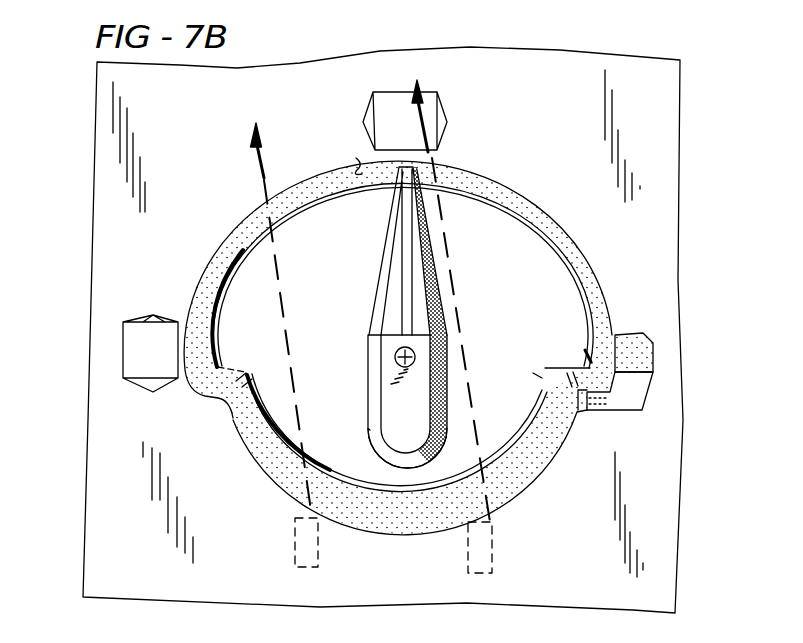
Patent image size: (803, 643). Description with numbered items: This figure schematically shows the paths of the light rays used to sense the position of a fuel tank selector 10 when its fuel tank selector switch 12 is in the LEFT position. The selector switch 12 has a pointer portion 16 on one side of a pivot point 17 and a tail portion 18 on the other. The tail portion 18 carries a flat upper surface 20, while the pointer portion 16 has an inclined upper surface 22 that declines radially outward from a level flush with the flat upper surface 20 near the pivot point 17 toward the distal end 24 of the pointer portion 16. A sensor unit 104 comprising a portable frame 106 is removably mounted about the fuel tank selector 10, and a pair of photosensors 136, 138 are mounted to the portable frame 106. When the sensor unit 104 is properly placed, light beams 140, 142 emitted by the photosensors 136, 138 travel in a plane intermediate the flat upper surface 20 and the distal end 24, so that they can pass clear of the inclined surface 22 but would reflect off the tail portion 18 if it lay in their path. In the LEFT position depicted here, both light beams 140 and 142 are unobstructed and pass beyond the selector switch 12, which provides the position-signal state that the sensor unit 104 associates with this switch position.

The fuel tank selector 10 is at (490, 224).
The fuel tank selector switch 12 is at (367, 355).
The pointer portion 16 is at (380, 273).
The pivot point 17 is at (415, 352).
The tail portion 18 is at (367, 415).
The flat upper surface 20 is at (433, 253).
The inclined upper surface 22 is at (413, 433).
The distal end 24 is at (356, 158).
The sensor unit 104 is at (70, 543).
The portable frame 106 is at (102, 453).
The photosensor 136 is at (293, 537).
The photosensor 138 is at (493, 550).
The light beam 140 is at (247, 160).
The light beam 142 is at (456, 303).